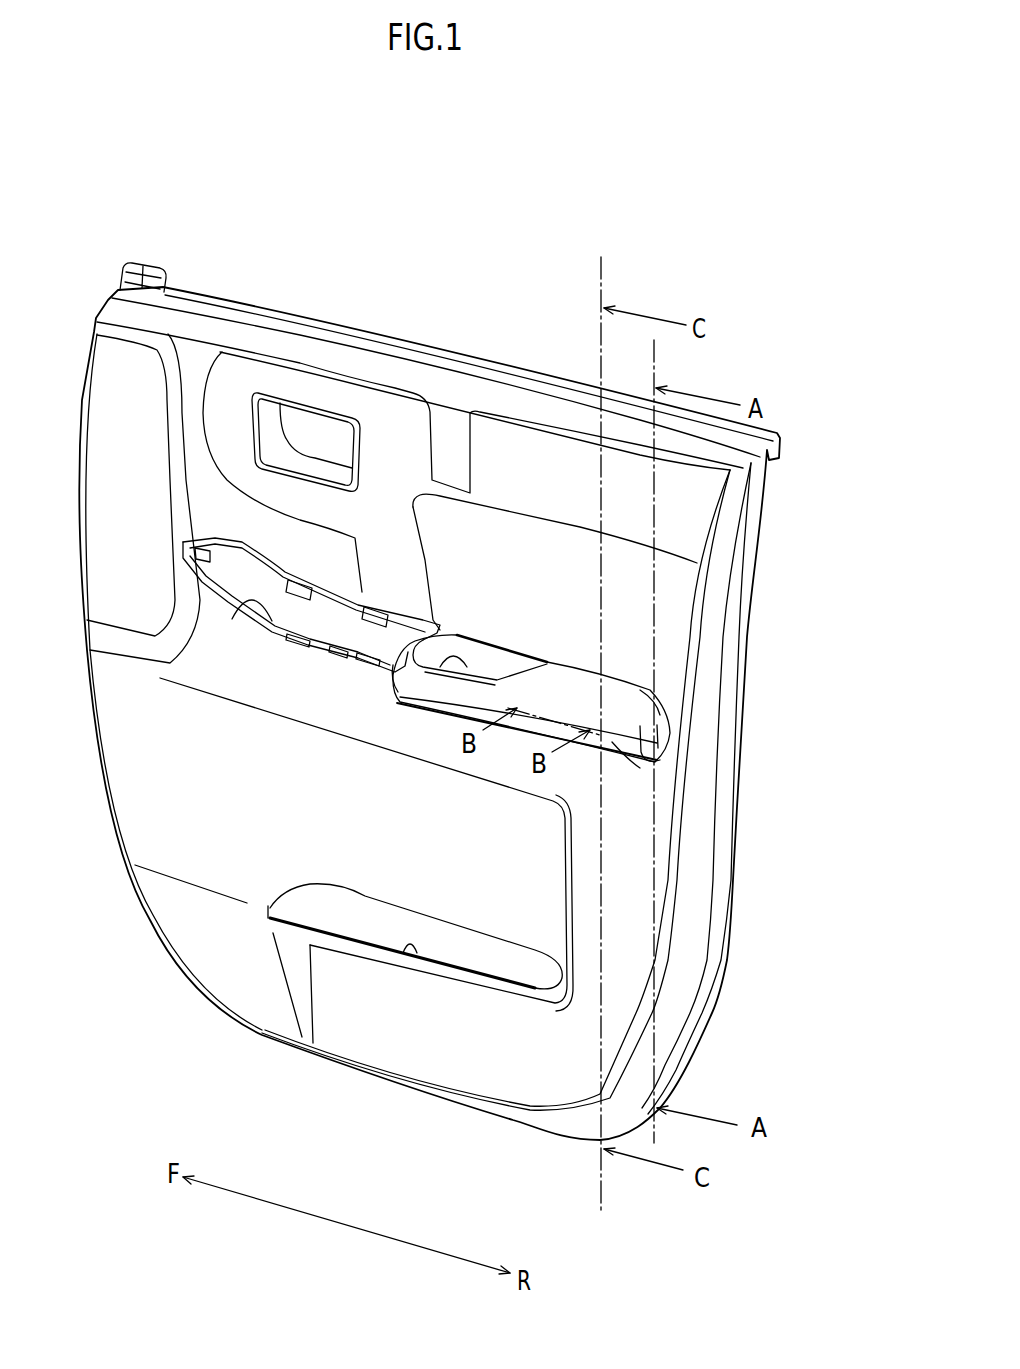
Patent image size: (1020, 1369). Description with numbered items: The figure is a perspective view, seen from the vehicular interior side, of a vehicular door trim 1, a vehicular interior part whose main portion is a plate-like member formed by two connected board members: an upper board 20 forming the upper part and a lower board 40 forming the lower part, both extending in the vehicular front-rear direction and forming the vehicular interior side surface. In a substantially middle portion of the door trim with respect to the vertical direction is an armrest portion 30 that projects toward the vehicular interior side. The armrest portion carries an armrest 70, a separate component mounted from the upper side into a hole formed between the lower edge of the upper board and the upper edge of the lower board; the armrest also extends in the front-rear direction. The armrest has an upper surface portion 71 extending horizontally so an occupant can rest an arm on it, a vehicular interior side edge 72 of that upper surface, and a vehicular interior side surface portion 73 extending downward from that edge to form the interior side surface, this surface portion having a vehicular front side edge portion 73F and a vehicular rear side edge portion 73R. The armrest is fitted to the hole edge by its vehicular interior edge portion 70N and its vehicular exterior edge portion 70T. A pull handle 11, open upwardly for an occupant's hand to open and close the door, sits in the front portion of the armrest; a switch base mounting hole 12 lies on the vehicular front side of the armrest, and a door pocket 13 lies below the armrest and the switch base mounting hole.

The vehicular door trim 1 is at (145, 192).
The pull handle 11 is at (440, 667).
The switch base mounting hole 12 is at (232, 619).
The door pocket 13 is at (403, 950).
The upper board 20 is at (697, 497).
The armrest portion 30 is at (638, 666).
The lower board 40 is at (505, 1077).
The armrest 70 is at (647, 733).
The vehicular exterior edge portion 70T is at (564, 668).
The vehicular interior edge portion 70N is at (525, 733).
The upper surface portion 71 is at (647, 697).
The vehicular interior side edge 72 is at (610, 750).
The vehicular interior side surface portion 73 is at (603, 762).
The vehicular front side edge portion 73F is at (405, 682).
The vehicular rear side edge portion 73R is at (618, 740).